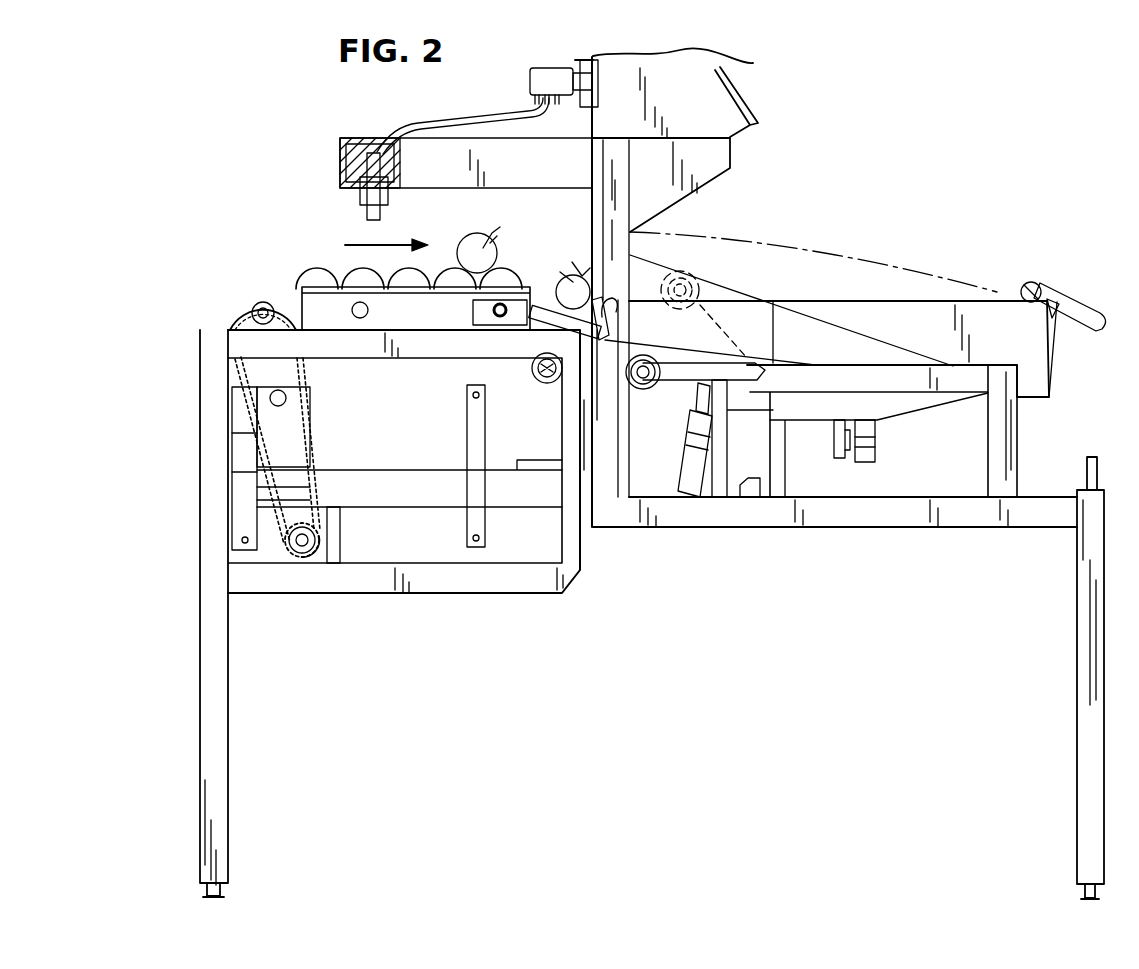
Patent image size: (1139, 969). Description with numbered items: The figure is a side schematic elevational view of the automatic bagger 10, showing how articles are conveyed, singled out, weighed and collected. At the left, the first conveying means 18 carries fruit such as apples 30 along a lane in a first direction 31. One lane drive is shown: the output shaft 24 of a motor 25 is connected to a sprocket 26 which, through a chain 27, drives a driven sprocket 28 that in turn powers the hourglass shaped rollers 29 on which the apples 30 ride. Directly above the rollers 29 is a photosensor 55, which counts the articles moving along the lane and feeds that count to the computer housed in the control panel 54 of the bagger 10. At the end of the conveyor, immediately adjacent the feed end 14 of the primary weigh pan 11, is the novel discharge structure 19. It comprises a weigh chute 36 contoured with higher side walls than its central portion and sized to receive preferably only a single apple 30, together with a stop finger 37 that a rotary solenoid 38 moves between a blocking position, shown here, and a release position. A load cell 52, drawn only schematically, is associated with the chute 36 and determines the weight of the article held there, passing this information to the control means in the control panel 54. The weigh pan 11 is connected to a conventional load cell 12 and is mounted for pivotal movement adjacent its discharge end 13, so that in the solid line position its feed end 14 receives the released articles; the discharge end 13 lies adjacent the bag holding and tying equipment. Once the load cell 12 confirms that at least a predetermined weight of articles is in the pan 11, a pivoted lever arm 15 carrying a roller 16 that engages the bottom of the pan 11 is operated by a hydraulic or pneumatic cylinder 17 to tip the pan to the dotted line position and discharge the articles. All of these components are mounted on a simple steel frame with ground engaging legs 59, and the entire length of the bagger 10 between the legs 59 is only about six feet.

The bagger 10 is at (862, 100).
The primary weigh pan 11 is at (740, 243).
The load cell 12 is at (878, 430).
The discharge end 13 is at (992, 290).
The feed end 14 is at (600, 342).
The pivoted lever arm 15 is at (668, 382).
The roller 16 is at (640, 345).
The hydraulic or pneumatic cylinder 17 is at (686, 470).
The first conveying means 18 is at (326, 228).
The discharge structure 19 is at (543, 263).
The output shaft 24 is at (300, 560).
The motor 25 is at (272, 548).
The sprocket 26 is at (320, 528).
The chain 27 is at (312, 448).
The driven sprocket 28 is at (230, 300).
The hourglass shaped rollers 29 is at (310, 277).
The apples 30 is at (478, 247).
The first direction 31 is at (386, 245).
The weigh chute 36 is at (540, 325).
The stop finger 37 is at (598, 296).
The rotary solenoid 38 is at (537, 378).
The load cell 52 is at (535, 432).
The control panel 54 is at (733, 80).
The photosensor 55 is at (362, 185).
The ground engaging legs 59 is at (229, 708).